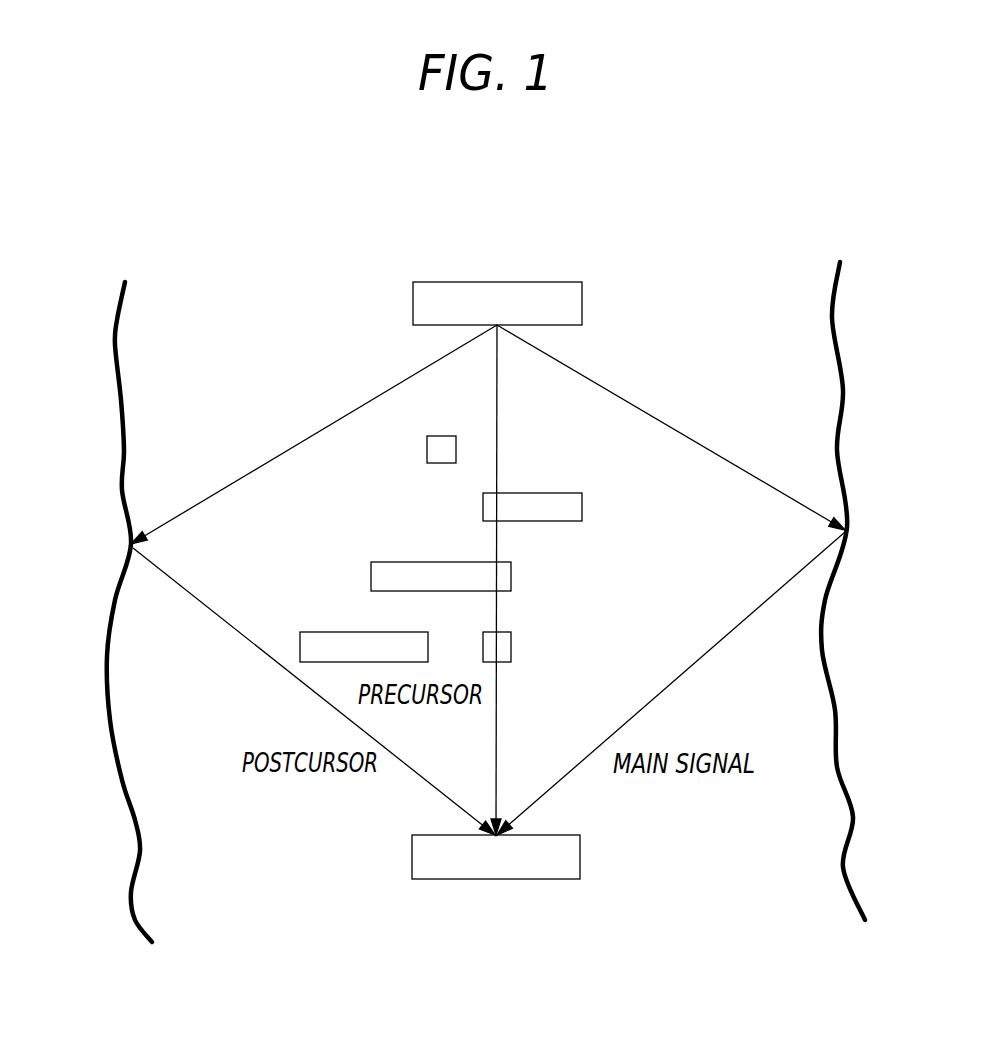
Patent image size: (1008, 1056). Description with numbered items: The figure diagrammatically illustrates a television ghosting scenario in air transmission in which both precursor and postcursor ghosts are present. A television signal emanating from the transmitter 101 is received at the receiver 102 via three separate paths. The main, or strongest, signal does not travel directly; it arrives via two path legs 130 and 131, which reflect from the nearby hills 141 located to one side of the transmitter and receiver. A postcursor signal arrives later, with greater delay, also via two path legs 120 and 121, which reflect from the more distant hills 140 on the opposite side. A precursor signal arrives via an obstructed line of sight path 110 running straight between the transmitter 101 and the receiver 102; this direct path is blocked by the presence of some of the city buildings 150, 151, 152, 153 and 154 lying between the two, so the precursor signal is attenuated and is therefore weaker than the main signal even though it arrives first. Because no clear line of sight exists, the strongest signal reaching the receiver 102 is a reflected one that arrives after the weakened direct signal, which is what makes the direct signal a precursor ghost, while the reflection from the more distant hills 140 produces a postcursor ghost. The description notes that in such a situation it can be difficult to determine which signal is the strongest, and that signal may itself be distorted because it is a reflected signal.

The transmitter 101 is at (560, 281).
The receiver 102 is at (412, 862).
The obstructed line of sight path 110 is at (493, 740).
The path leg 120 is at (290, 450).
The path leg 121 is at (216, 612).
The path leg 130 is at (640, 412).
The path leg 131 is at (720, 645).
The more distant hills 140 is at (117, 333).
The nearby hills 141 is at (831, 316).
The city building 150 is at (540, 493).
The city building 151 is at (452, 561).
The city building 152 is at (363, 632).
The city building 153 is at (511, 635).
The city building 154 is at (443, 436).